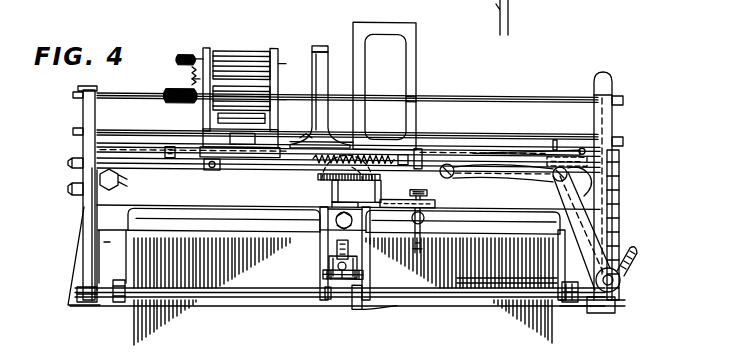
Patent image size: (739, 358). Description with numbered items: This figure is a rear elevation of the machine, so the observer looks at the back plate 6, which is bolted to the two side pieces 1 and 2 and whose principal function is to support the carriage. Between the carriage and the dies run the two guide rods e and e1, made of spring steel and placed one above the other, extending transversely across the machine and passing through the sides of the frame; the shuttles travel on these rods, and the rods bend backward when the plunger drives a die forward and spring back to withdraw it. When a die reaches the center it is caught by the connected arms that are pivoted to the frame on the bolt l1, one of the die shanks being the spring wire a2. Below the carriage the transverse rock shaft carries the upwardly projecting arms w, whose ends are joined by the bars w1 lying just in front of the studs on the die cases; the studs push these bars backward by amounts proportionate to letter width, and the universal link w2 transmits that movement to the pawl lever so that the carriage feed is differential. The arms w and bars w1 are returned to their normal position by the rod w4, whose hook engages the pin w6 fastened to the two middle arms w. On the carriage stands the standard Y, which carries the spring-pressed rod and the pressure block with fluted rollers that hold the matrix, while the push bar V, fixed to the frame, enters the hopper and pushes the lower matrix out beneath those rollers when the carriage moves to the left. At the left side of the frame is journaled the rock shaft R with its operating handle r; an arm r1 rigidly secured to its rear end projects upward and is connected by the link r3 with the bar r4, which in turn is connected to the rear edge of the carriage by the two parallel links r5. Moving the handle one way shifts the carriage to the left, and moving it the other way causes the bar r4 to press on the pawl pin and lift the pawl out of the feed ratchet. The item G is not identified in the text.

The side piece 1 is at (613, 308).
The side piece 2 is at (80, 285).
The back plate 6 is at (348, 188).
The guide rod e is at (468, 97).
The guide rod e1 is at (458, 138).
The operating handle r is at (608, 186).
The arm r1 is at (581, 228).
The link r3 is at (519, 172).
The bar r4 is at (281, 165).
The parallel link r5 is at (169, 146).
The standard Y is at (319, 83).
The push bar V is at (497, 147).
The arm w is at (118, 283).
The bar w1 is at (502, 218).
The universal link w2 is at (424, 215).
The rod w4 is at (350, 261).
The pin w6 is at (327, 274).
The guide G is at (337, 250).
The bolt l1 is at (337, 212).
The spring wire a2 is at (520, 323).
The rock shaft R is at (623, 269).